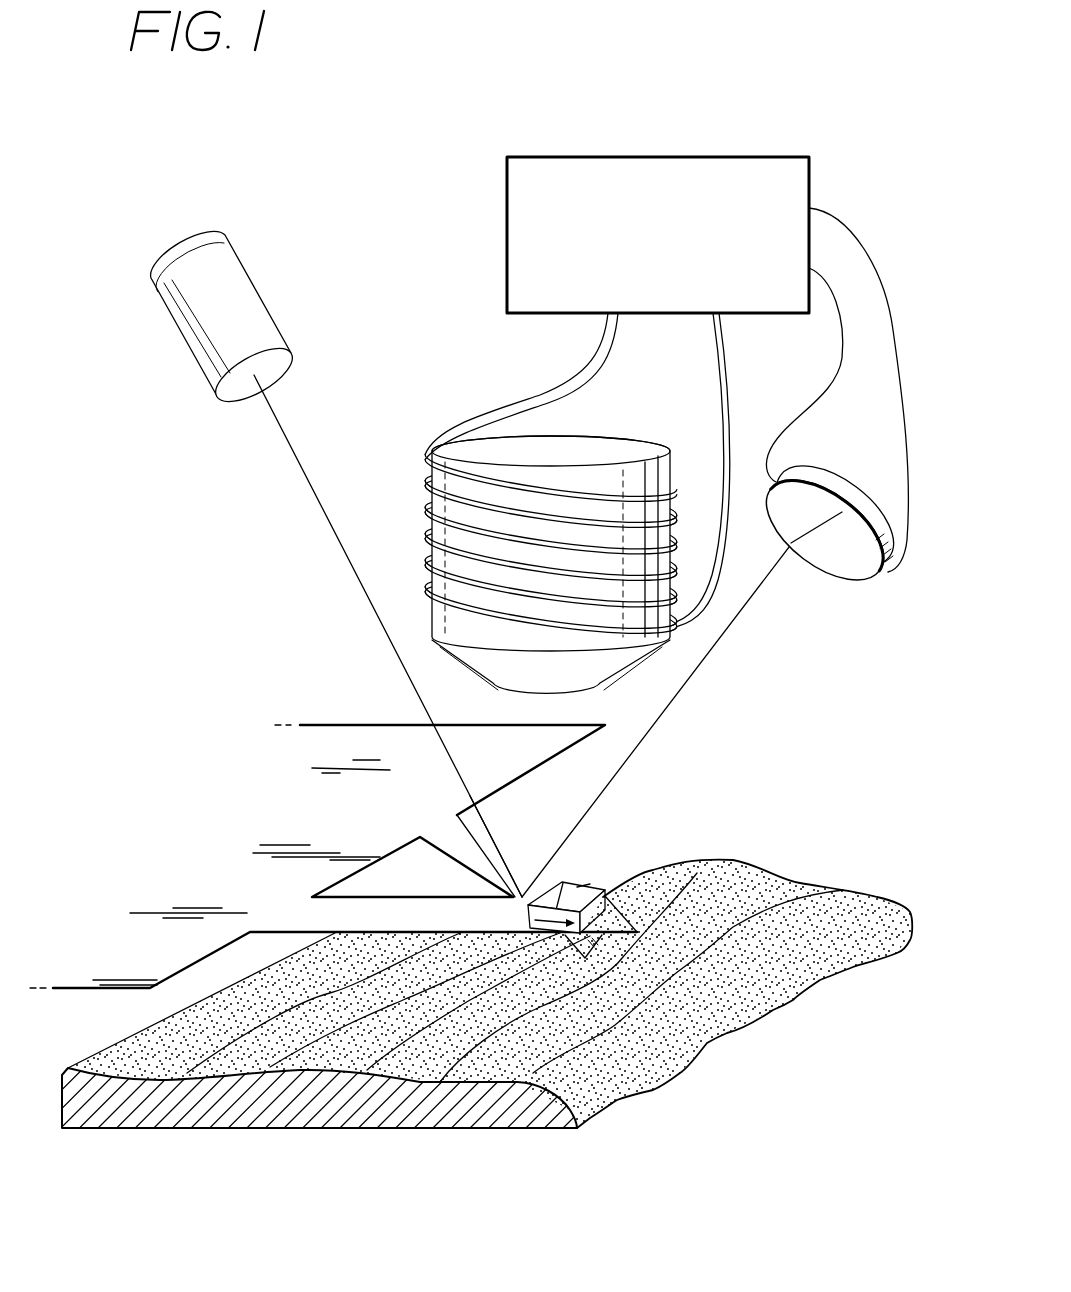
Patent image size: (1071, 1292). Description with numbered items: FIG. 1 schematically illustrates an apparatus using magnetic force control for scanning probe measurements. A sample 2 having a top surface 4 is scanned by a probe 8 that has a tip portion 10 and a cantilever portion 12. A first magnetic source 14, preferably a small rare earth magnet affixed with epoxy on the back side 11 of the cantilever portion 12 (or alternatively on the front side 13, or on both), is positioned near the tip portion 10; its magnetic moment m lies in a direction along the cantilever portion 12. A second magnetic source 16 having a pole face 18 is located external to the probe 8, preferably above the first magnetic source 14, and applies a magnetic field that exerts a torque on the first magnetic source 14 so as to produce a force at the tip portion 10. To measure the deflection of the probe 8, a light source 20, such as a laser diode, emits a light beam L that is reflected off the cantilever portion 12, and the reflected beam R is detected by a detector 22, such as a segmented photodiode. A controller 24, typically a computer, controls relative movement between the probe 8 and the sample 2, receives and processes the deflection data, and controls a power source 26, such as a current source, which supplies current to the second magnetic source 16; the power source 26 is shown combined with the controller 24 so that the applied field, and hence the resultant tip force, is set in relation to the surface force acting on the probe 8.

The sample 2 is at (538, 1130).
The top surface 4 is at (710, 865).
The probe 8 is at (230, 733).
The tip portion 10 is at (676, 920).
The back side 11 is at (527, 857).
The cantilever portion 12 is at (478, 803).
The front side 13 is at (283, 927).
The first magnetic source 14 is at (563, 883).
The magnetic moment m is at (577, 887).
The second magnetic source 16 is at (593, 448).
The pole face 18 is at (573, 675).
The light source 20 is at (243, 288).
The detector 22 is at (825, 483).
The controller 24 is at (658, 200).
The power source 26 is at (677, 157).
The light beam L is at (278, 433).
The reflected beam R is at (722, 633).